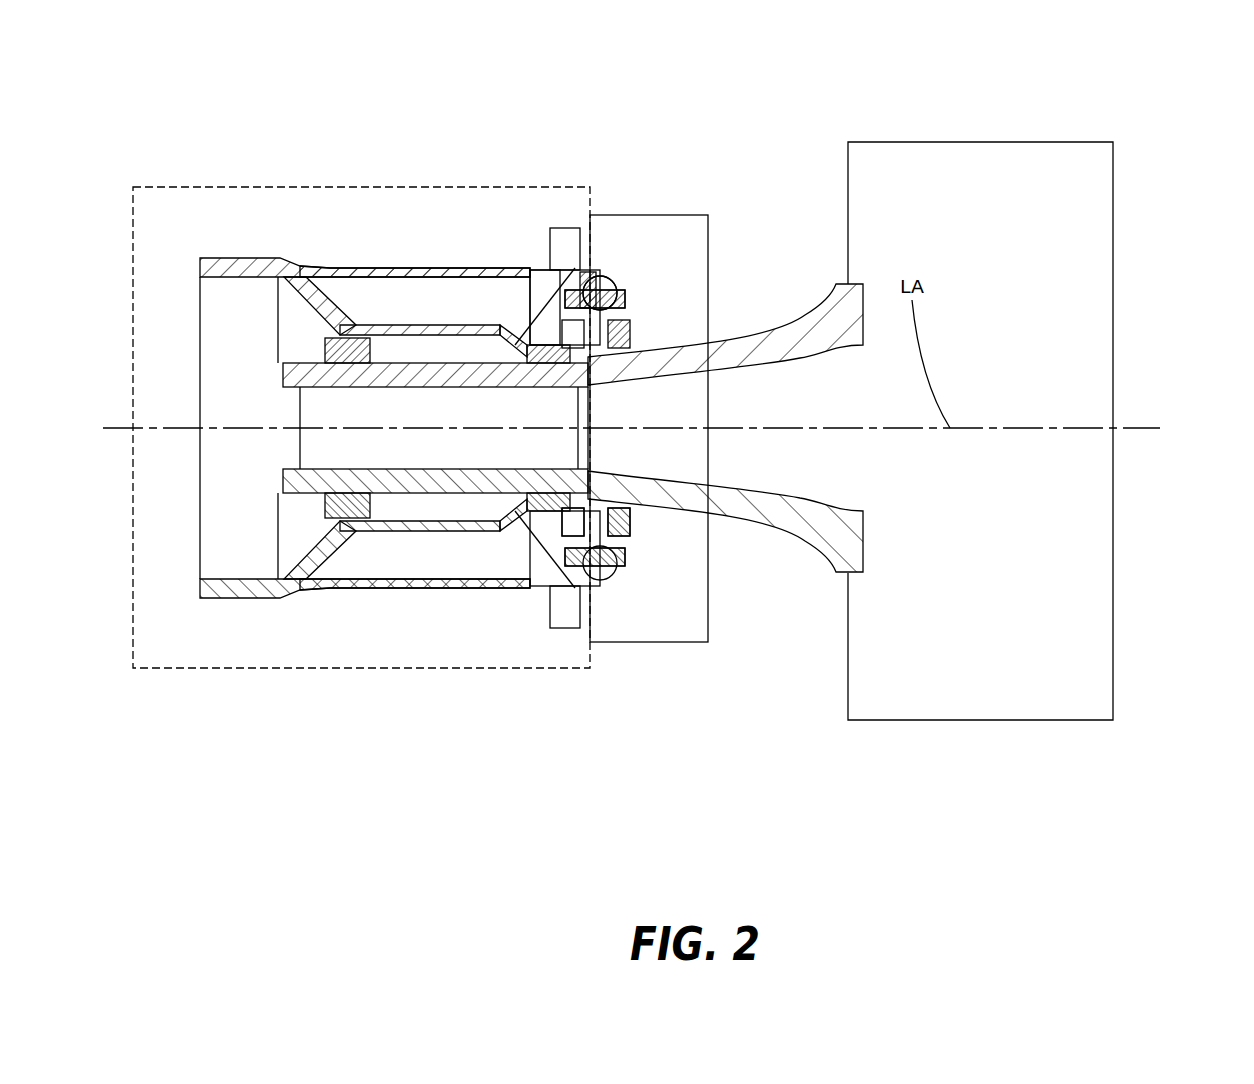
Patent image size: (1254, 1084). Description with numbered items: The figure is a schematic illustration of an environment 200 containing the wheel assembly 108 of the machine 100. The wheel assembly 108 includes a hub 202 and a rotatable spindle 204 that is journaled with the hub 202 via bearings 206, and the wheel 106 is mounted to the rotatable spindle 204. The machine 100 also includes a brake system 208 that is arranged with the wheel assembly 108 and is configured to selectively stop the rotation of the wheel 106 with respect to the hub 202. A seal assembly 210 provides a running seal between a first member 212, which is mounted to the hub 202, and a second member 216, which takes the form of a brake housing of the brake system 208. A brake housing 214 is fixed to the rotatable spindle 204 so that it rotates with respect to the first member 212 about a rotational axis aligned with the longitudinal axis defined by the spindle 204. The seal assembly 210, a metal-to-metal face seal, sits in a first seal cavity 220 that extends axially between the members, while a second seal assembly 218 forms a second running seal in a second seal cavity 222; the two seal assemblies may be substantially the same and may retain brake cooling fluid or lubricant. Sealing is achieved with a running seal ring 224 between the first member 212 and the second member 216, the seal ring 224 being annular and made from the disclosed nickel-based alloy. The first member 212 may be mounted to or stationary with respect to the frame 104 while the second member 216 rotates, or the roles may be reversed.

The machine 100 is at (150, 168).
The frame 104 is at (245, 187).
The wheel 106 is at (848, 170).
The wheel assembly 108 is at (355, 250).
The environment 200 is at (1163, 75).
The hub 202 is at (435, 275).
The rotatable spindle 204 is at (812, 335).
The bearings 206 is at (332, 365).
The brake system 208 is at (712, 627).
The seal assembly 210 is at (620, 300).
The first member 212 is at (550, 268).
The brake housing 214 is at (615, 305).
The second member 216 is at (608, 570).
The second seal assembly 218 is at (637, 547).
The first seal cavity 220 is at (525, 280).
The second seal cavity 222 is at (614, 519).
The seal ring 224 is at (588, 300).